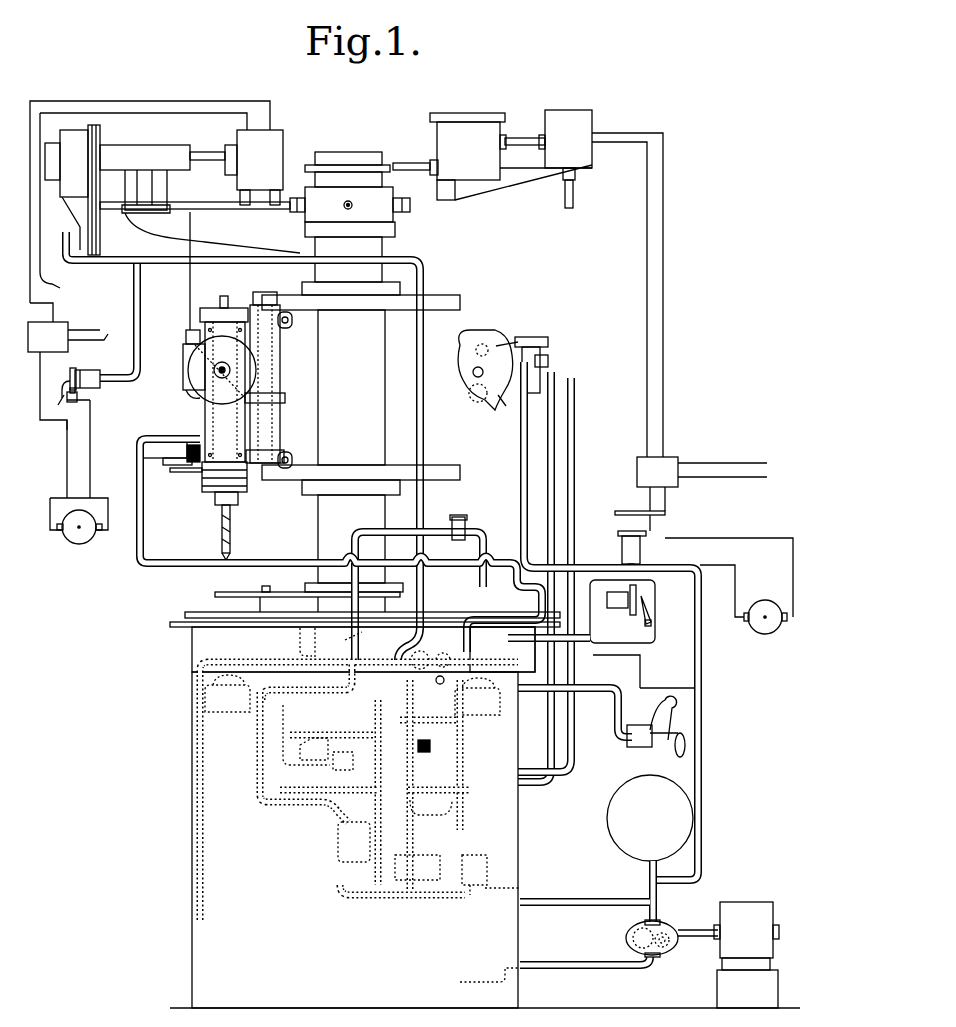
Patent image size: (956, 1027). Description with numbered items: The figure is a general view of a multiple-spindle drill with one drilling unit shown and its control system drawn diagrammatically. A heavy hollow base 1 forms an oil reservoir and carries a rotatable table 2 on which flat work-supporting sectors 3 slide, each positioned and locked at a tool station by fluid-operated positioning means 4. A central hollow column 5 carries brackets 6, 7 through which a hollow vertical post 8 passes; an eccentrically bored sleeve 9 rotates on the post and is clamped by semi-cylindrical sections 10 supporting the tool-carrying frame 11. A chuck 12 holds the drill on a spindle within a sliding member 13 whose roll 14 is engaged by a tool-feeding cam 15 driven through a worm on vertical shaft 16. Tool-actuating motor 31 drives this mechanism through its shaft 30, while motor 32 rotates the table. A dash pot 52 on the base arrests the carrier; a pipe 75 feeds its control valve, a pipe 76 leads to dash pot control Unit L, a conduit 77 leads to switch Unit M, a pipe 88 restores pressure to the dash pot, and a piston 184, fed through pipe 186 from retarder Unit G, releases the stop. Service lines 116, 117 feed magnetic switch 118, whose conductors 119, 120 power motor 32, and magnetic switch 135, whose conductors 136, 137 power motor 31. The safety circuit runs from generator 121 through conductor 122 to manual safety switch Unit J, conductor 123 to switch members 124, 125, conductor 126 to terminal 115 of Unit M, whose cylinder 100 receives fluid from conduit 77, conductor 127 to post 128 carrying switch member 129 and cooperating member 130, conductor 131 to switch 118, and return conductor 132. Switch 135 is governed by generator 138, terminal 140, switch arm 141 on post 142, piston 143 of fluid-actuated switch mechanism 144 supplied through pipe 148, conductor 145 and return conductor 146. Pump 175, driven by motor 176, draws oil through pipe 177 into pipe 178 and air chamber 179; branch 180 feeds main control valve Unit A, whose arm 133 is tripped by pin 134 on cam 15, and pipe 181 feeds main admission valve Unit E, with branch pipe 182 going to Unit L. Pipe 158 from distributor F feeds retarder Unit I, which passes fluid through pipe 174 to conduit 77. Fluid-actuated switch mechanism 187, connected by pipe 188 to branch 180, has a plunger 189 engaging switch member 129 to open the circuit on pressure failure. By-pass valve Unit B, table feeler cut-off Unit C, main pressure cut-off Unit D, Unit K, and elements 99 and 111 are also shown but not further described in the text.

The base 1 is at (192, 763).
The rotatable table 2 is at (182, 627).
The work-supporting members 3 is at (185, 616).
The fluid-operated positioning means 4 is at (205, 703).
The central hollow column 5 is at (318, 512).
The bracket 6 is at (348, 467).
The bracket 7 is at (372, 300).
The hollow vertical post 8 is at (279, 363).
The sleeve 9 is at (281, 379).
The semi-cylindrical sections 10 is at (284, 324).
The tool-carrying frame 11 is at (208, 415).
The chuck 12 is at (213, 494).
The sliding member 13 is at (218, 470).
The roll 14 is at (184, 374).
The tool-feeding cam 15 is at (192, 400).
The vertical shaft 16 is at (188, 283).
The motor shaft 30 is at (201, 157).
The tool-actuating motor 31 is at (275, 128).
The carrier-actuating motor 32 is at (567, 113).
The dash pot 52 is at (446, 634).
The pipe 75 is at (203, 873).
The pipe 76 is at (456, 798).
The conduit 77 is at (513, 633).
The pipe 88 is at (500, 771).
The line 99 is at (366, 805).
The cylinder 100 is at (618, 594).
The pointer 111 is at (631, 616).
The terminal 115 is at (646, 626).
The service line 116 is at (100, 340).
The service line 117 is at (82, 329).
The magnetic switch 118 is at (645, 462).
The conductor 119 is at (667, 343).
The conductor 120 is at (647, 340).
The generator 121 is at (763, 605).
The conductor 122 is at (682, 689).
The conductor 123 is at (641, 672).
The switch member 124 is at (162, 464).
The switch member 125 is at (170, 474).
The conductor 126 is at (137, 472).
The conductor 127 is at (643, 603).
The post 128 is at (651, 521).
The switch member 129 is at (632, 515).
The switch member 130 is at (645, 512).
The conductor 131 is at (646, 497).
The return conductor 132 is at (733, 538).
The actuating arm 133 is at (503, 344).
The pin 134 is at (485, 345).
The magnetic switch 135 is at (58, 324).
The conductor 136 is at (56, 290).
The conductor 137 is at (42, 290).
The generator 138 is at (92, 454).
The terminal 140 is at (78, 396).
The switch arm 141 is at (62, 394).
The post 142 is at (91, 362).
The piston 143 is at (93, 368).
The fluid-actuating switch mechanism 144 is at (98, 384).
The conductor 145 is at (65, 360).
The return conductor 146 is at (60, 422).
The pipe 148 is at (426, 272).
The pipe 158 is at (352, 558).
The pipe 174 is at (487, 534).
The pump 175 is at (630, 940).
The electric motor 176 is at (742, 908).
The pipe 177 is at (548, 968).
The pipe 178 is at (659, 895).
The air chamber 179 is at (615, 831).
The branch 180 is at (704, 800).
The pipe 181 is at (582, 898).
The branch pipe 182 is at (511, 881).
The piston 184 is at (466, 658).
The pipe 186 is at (392, 646).
The fluid-actuated switch mechanism 187 is at (623, 548).
The pipe 188 is at (636, 568).
The plunger 189 is at (637, 535).
The main control valve A is at (546, 357).
The by-pass valve B is at (419, 792).
The table feeler control and cut-off C is at (343, 767).
The main pressure cut-off D is at (317, 757).
The main admission valve E is at (402, 873).
The distributor F is at (354, 842).
The retarder for the tool feed control G is at (393, 690).
The retarder for the table drive control I is at (458, 518).
The manual safety switch J is at (656, 733).
The valve K is at (450, 650).
The dash pot control L is at (474, 875).
The fluid-actuated switch M is at (622, 611).